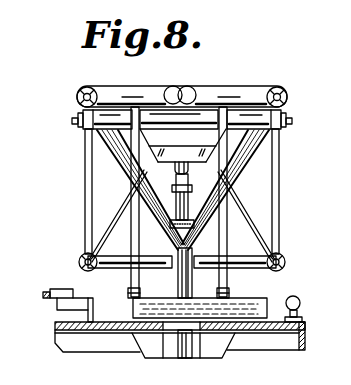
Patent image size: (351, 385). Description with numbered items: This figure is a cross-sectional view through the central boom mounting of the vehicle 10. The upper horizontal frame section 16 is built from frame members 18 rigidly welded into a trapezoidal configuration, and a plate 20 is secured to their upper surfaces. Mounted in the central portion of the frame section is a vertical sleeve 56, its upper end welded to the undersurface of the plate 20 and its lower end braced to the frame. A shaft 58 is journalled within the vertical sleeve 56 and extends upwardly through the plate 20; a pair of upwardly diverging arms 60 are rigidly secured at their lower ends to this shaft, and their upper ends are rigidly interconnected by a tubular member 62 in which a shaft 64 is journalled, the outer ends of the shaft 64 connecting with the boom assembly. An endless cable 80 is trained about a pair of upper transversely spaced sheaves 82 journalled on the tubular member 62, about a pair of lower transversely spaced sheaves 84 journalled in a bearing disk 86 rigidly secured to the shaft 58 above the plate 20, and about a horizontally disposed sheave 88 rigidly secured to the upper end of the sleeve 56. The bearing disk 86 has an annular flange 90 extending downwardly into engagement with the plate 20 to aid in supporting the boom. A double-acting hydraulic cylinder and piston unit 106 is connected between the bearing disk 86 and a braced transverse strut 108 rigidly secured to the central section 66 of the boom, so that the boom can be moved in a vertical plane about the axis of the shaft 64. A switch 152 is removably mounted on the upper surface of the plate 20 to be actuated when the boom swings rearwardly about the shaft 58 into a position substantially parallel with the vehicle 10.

The vehicle 10 is at (46, 331).
The upper horizontal frame section 16 is at (312, 318).
The frame members 18 is at (258, 345).
The plate 20 is at (71, 351).
The vertical sleeve 56 is at (170, 355).
The shaft 58 is at (178, 282).
The upwardly diverging arms 60 is at (216, 176).
The tubular member 62 is at (185, 117).
The shaft 64 is at (72, 121).
The central section 66 is at (237, 92).
The endless cable 80 is at (131, 239).
The upper transversely spaced sheaves 82 is at (200, 138).
The lower transversely spaced sheaves 84 is at (128, 292).
The bearing disk 86 is at (193, 275).
The horizontally disposed sheave 88 is at (233, 308).
The annular flange 90 is at (113, 313).
The double-acting hydraulic cylinder and piston unit 106 is at (229, 202).
The transverse strut 108 is at (130, 178).
The switch 152 is at (292, 295).